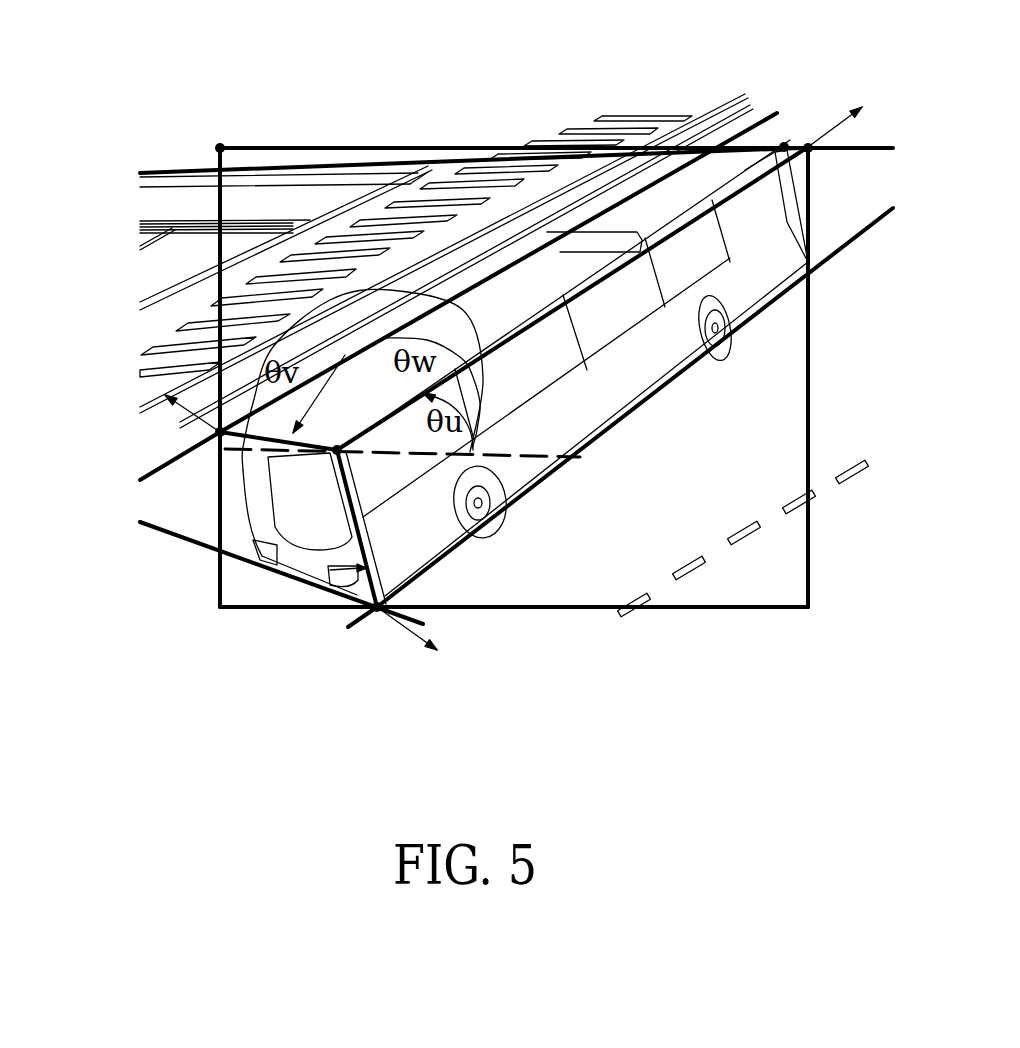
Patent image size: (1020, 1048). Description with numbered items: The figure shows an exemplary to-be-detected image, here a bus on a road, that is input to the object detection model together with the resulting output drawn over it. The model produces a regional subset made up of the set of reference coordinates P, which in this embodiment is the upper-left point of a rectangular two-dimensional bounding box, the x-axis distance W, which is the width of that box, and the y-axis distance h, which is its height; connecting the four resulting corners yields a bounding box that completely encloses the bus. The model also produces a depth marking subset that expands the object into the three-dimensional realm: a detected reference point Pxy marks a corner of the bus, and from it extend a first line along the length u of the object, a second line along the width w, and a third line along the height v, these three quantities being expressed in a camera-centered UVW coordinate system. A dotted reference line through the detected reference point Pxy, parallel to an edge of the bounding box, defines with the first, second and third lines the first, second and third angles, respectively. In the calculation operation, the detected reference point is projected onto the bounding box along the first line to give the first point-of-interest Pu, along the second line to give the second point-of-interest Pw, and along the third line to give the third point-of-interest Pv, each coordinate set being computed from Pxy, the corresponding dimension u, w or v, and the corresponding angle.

The set of reference coordinates P is at (240, 127).
The first point-of-interest Pu is at (808, 147).
The third point-of-interest Pv is at (458, 649).
The second point-of-interest Pw is at (125, 404).
The detected reference point Pxy is at (355, 429).
The x-axis distance W is at (556, 130).
The y-axis distance h is at (822, 377).
The length of the to-be-detected object u is at (572, 298).
The height of the to-be-detected object v is at (362, 528).
The width of the to-be-detected object w is at (278, 452).